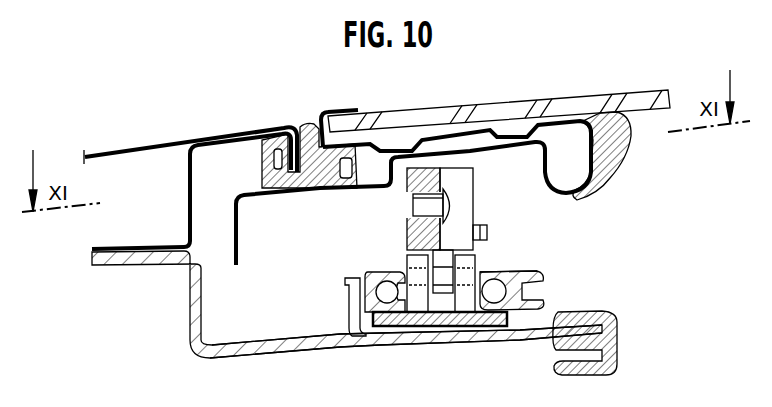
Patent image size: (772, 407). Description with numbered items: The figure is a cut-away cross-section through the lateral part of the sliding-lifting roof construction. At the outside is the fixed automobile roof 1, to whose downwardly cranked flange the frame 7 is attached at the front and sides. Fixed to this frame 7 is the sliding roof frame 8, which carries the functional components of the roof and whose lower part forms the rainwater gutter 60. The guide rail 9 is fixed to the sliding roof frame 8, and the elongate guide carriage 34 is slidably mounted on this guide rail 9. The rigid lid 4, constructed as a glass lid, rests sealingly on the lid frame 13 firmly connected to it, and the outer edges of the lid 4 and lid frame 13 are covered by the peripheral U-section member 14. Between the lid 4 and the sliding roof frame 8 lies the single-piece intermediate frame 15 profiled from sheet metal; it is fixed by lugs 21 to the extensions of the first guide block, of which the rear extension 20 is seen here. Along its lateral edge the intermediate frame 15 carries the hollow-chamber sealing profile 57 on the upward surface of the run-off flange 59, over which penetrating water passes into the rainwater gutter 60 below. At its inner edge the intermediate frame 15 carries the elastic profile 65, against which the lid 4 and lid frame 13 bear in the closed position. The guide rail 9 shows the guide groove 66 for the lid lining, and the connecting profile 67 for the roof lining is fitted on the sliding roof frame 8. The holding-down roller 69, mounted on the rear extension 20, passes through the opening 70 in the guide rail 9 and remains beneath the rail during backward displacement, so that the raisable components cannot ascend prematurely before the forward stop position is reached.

The fixed automobile roof 1 is at (145, 150).
The lid 4 is at (618, 101).
The frame 7 is at (188, 180).
The sliding roof frame 8 is at (190, 307).
The guide rail 9 is at (380, 275).
The lid frame 13 is at (498, 131).
The peripheral U-section member 14 is at (328, 112).
The intermediate frame 15 is at (430, 163).
The rear extension 20 is at (415, 180).
The lugs 21 is at (474, 178).
The guide carriage 34 is at (448, 327).
The sealing profile 57 is at (253, 169).
The run-off flange 59 is at (240, 223).
The rainwater gutter 60 is at (283, 338).
The elastic profile 65 is at (612, 160).
The guide groove 66 is at (545, 283).
The connecting profile 67 is at (617, 351).
The holding-down roller 69 is at (487, 226).
The opening 70 is at (485, 272).